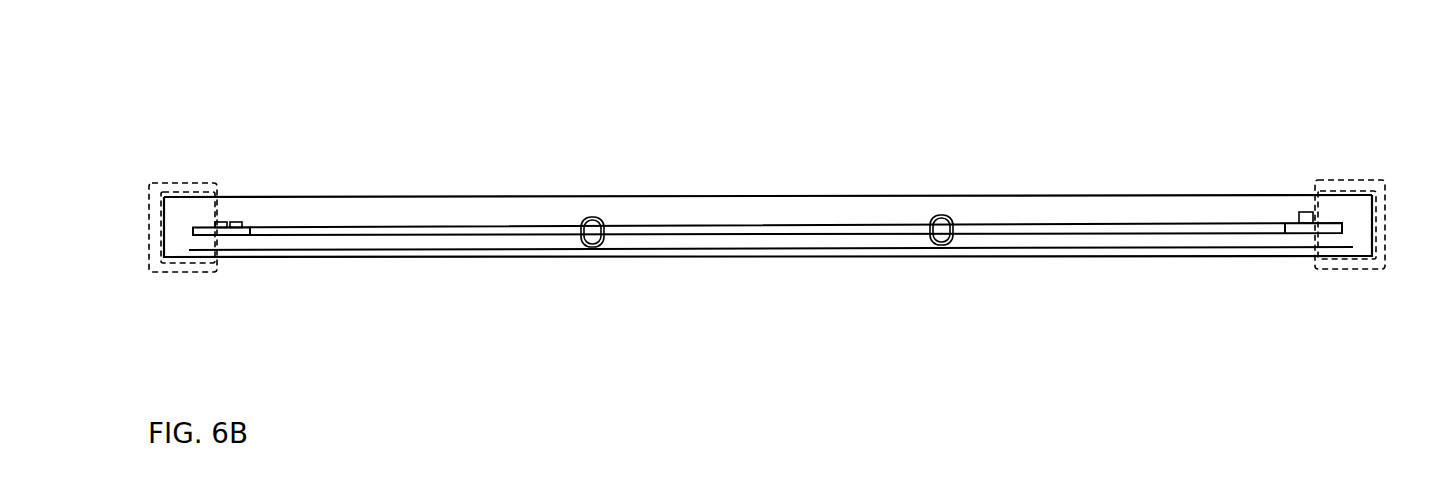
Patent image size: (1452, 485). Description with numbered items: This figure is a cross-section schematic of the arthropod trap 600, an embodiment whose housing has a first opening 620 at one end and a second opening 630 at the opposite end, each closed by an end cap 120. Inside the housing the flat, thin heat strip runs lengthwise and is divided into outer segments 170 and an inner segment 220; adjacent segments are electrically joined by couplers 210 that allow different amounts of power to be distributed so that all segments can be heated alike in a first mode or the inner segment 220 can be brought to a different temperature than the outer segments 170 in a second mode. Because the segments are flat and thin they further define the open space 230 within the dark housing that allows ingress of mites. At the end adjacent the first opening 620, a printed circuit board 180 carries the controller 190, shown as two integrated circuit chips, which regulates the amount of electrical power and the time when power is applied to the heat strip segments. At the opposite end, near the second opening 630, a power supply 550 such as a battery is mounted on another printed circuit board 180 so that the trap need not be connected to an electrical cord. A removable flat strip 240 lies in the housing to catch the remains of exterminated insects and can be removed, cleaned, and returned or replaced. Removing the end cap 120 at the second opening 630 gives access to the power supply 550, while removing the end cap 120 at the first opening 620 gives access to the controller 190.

The arthropod trap 600 is at (1112, 31).
The end cap 120 is at (188, 182).
The first opening 620 is at (133, 224).
The second opening 630 is at (1398, 234).
The controller 190 is at (236, 223).
The printed circuit board 180 is at (226, 237).
The outer segments 170 is at (796, 263).
The inner segment 220 is at (695, 236).
The open space 230 is at (423, 215).
The removable flat strip 240 is at (1163, 247).
The couplers 210 is at (585, 217).
The power supply 550 is at (1308, 224).